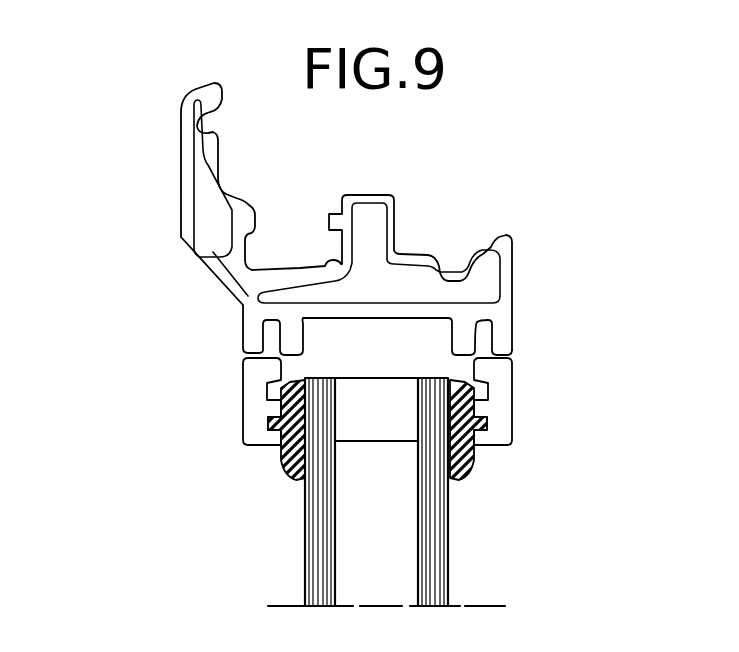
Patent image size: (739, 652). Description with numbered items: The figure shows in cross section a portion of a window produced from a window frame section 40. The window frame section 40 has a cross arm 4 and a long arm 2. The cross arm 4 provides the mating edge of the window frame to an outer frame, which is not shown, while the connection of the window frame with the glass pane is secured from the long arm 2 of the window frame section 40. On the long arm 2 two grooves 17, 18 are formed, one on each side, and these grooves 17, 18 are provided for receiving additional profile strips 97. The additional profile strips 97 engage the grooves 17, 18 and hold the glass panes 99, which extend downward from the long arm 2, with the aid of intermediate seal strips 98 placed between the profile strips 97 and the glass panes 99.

The long arm 2 is at (512, 264).
The cross arm 4 is at (200, 93).
The groove 17 is at (250, 330).
The groove 18 is at (497, 331).
The window frame section 40 is at (139, 266).
The additional profile strip 97 is at (258, 403).
The intermediate seal strip 98 is at (279, 457).
The glass pane 99 is at (325, 568).